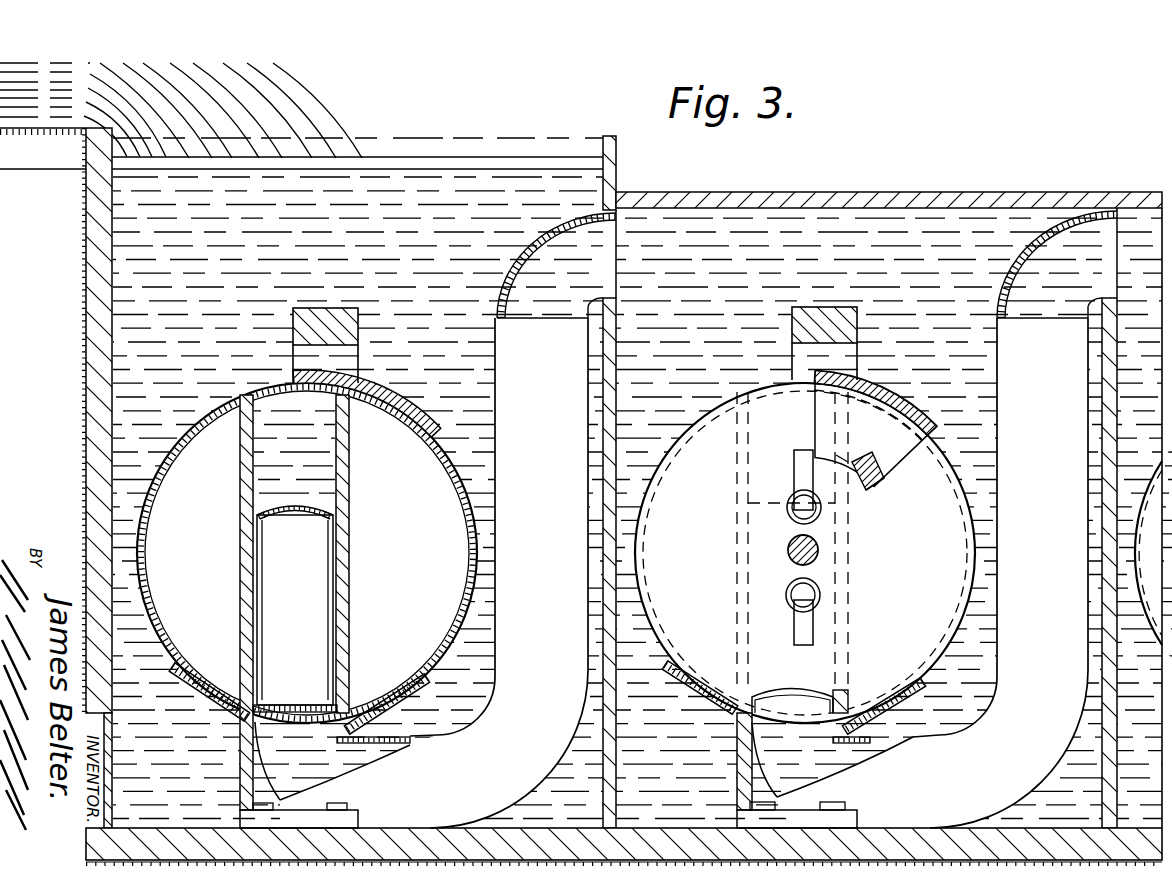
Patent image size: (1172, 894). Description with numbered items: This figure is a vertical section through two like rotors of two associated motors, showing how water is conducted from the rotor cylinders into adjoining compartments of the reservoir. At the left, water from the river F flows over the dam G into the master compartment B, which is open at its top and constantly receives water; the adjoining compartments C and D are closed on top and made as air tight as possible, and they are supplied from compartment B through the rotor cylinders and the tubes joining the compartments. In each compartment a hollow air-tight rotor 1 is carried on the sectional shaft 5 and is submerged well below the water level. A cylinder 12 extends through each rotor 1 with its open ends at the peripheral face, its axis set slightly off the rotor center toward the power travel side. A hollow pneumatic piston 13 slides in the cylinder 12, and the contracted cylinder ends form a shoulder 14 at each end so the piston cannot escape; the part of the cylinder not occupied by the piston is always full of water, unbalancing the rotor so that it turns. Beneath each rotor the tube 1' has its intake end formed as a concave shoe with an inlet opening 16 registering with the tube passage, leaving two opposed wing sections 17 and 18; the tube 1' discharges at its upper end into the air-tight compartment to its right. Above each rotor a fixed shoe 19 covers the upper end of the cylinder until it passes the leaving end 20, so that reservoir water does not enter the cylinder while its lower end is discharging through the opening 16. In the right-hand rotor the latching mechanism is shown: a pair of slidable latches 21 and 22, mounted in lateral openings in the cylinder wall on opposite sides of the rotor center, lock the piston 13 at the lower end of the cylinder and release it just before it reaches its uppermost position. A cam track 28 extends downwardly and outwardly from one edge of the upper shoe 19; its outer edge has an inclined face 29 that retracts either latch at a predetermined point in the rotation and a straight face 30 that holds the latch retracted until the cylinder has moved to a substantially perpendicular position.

The rotor 1 is at (649, 553).
The tube 1' is at (763, 519).
The sectional shaft 5 is at (822, 551).
The cylinder 12 is at (352, 490).
The pneumatic piston 13 is at (766, 672).
The shoulder 14 is at (240, 428).
The inlet opening 16 is at (248, 726).
The wing section 17 is at (200, 668).
The wing section 18 is at (403, 672).
The fixed shoe 19 is at (425, 408).
The leaving end 20 is at (293, 377).
The latch 21 is at (798, 482).
The latch 22 is at (810, 626).
The track 28 is at (868, 482).
The inclined face 29 is at (872, 468).
The straight face 30 is at (843, 457).
The master compartment B is at (486, 178).
The water compartment C is at (866, 210).
The water compartment D is at (1130, 210).
The river F is at (301, 148).
The dam G is at (77, 478).